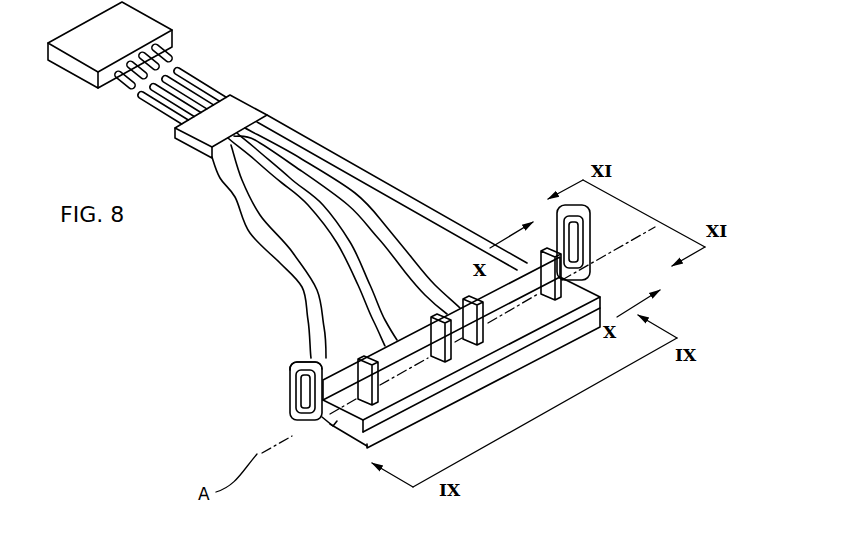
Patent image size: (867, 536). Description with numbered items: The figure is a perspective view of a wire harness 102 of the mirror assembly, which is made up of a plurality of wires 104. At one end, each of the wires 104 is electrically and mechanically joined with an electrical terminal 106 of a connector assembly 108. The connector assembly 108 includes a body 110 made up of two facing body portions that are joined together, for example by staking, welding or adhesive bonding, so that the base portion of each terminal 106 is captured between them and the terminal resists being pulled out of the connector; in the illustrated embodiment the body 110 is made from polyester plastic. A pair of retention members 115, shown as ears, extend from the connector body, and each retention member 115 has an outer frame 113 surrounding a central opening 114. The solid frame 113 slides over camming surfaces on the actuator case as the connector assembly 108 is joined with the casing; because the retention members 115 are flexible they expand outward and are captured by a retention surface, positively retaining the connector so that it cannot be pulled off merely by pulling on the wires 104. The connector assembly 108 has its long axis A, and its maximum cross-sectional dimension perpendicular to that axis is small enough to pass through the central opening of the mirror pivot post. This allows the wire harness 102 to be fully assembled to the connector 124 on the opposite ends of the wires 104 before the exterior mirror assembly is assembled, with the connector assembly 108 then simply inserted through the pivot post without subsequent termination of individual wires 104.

The wire harness 102 is at (190, 60).
The wires 104 is at (377, 210).
The electrical terminal 106 is at (378, 386).
The connector assembly 108 is at (331, 442).
The body 110 is at (378, 346).
The outer frame 113 is at (318, 361).
The central opening 114 is at (305, 404).
The retention members 115 is at (281, 377).
The connector 124 is at (92, 52).